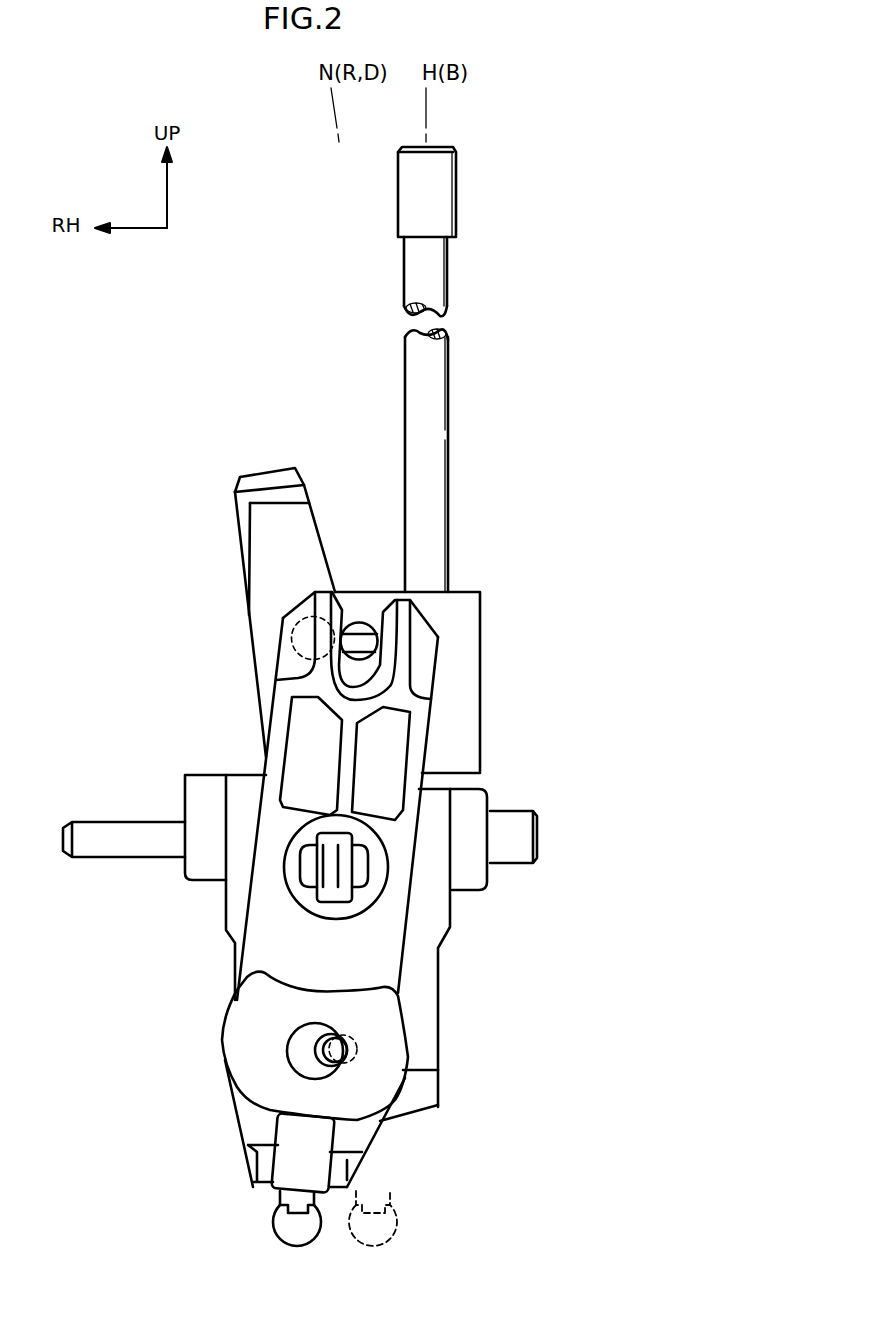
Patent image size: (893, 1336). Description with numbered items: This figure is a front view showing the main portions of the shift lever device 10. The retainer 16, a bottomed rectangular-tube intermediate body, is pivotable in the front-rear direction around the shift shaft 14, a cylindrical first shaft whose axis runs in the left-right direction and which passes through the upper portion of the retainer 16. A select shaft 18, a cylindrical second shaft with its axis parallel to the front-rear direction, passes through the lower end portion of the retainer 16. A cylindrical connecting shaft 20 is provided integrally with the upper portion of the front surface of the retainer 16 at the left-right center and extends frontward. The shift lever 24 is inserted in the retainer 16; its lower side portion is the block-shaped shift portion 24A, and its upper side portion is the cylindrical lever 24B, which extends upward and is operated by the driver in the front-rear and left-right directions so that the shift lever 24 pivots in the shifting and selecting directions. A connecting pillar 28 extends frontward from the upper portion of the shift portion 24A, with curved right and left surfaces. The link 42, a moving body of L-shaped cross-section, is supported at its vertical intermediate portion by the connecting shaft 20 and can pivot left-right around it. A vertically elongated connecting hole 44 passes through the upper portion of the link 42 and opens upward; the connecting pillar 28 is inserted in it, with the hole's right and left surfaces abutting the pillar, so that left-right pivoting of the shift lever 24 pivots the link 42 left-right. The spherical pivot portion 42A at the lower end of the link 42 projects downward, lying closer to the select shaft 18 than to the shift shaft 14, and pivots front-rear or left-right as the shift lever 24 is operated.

The shift lever device 10 is at (214, 362).
The shift shaft 14 is at (537, 808).
The retainer 16 is at (182, 767).
The select shaft 18 is at (333, 1053).
The connecting shaft 20 is at (312, 872).
The shift lever 24 is at (226, 479).
The shift portion 24A is at (481, 670).
The lever 24B is at (449, 420).
The connecting pillar 28 is at (355, 638).
The link 42 is at (419, 912).
The pivot portion 42A is at (277, 1233).
The connecting hole 44 is at (362, 684).